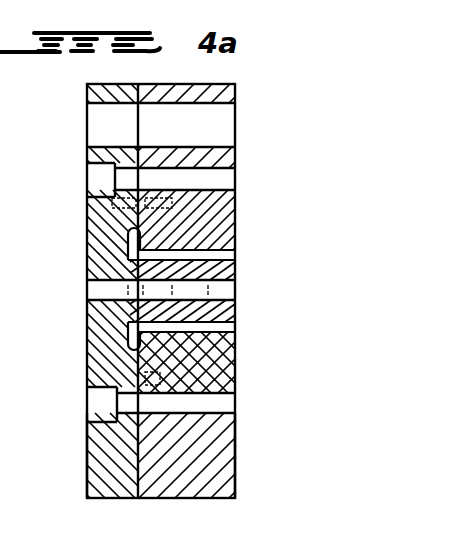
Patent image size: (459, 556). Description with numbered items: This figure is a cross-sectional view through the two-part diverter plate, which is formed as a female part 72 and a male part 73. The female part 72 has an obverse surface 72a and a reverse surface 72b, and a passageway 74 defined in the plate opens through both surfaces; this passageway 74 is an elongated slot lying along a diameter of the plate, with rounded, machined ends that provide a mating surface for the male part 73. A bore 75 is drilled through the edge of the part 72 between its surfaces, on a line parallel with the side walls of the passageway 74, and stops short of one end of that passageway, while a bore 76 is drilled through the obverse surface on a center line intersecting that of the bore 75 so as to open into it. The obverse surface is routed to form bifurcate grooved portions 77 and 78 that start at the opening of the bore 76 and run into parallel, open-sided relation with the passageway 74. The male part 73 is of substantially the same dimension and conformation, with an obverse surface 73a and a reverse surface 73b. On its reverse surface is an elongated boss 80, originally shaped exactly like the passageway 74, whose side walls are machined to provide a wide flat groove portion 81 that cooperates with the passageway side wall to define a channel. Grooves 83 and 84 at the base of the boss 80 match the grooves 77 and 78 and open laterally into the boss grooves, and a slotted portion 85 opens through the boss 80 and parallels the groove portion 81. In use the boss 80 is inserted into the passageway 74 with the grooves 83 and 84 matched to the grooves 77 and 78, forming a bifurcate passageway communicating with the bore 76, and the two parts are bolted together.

The female plate part 72 is at (235, 230).
The obverse surface 72a is at (132, 473).
The reverse surface 72b is at (237, 465).
The male plate part 73 is at (100, 500).
The obverse surface 73a is at (100, 209).
The reverse surface 73b is at (122, 470).
The passageway 74 is at (235, 345).
The bore 75 is at (246, 261).
The bore 76 is at (217, 212).
The grooved portion 77 is at (235, 388).
The grooved portion 78 is at (142, 251).
The elongated boss 80 is at (235, 323).
The flat groove portion 81 is at (142, 337).
The groove 83 is at (128, 340).
The groove 84 is at (128, 239).
The slotted portion 85 is at (233, 284).